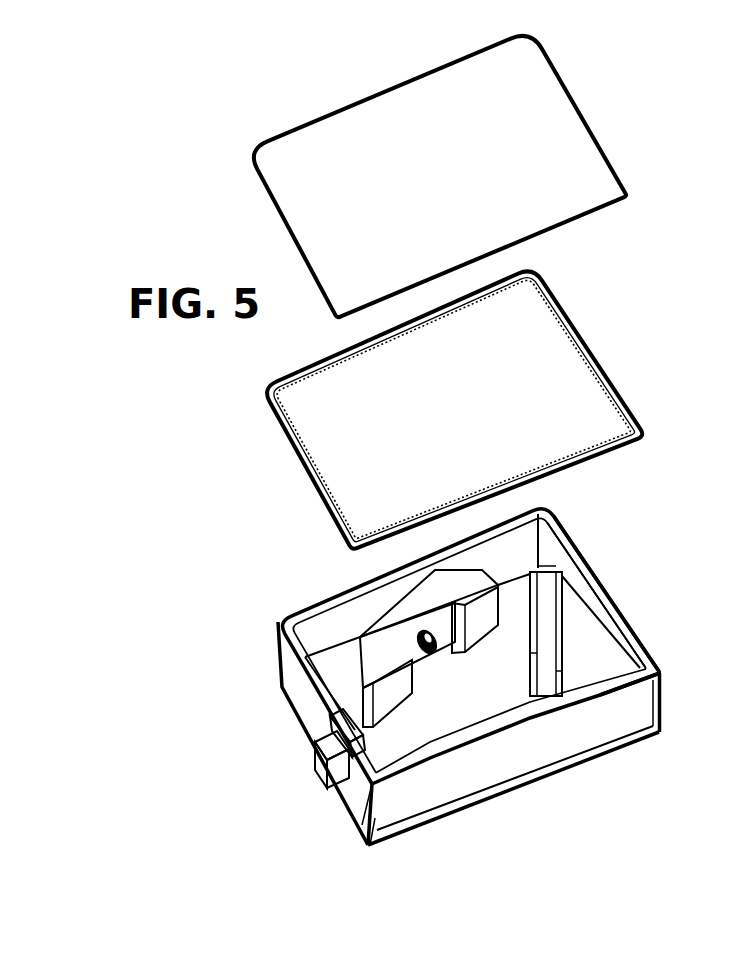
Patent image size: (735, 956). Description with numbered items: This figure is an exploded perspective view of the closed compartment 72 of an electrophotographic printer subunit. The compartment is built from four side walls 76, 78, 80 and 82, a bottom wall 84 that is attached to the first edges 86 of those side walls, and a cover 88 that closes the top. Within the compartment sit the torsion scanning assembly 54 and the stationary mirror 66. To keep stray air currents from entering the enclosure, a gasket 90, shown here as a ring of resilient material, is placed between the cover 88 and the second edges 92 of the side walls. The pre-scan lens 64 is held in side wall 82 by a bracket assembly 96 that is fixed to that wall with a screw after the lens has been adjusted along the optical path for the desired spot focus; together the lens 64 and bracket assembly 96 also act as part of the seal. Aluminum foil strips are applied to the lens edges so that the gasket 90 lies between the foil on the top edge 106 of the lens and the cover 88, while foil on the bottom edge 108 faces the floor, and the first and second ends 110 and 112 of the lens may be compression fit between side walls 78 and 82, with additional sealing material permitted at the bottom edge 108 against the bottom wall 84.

The cover 88 is at (440, 176).
The gasket 90 is at (616, 393).
The closed compartment 72 is at (640, 545).
The torsion scanning assembly 54 is at (420, 603).
The side wall 80 is at (517, 550).
The stationary mirror 66 is at (533, 617).
The side wall 78 is at (627, 615).
The second edges 92 is at (630, 623).
The top edge 106 is at (630, 672).
The first end 110 is at (661, 692).
The bottom edge 108 is at (605, 752).
The side wall 76 is at (552, 744).
The bottom wall 84 is at (457, 815).
The first edges 86 is at (375, 818).
The second end 112 is at (362, 825).
The pre-scan lens 64 is at (298, 759).
The bracket assembly 96 is at (343, 728).
The side wall 82 is at (295, 698).